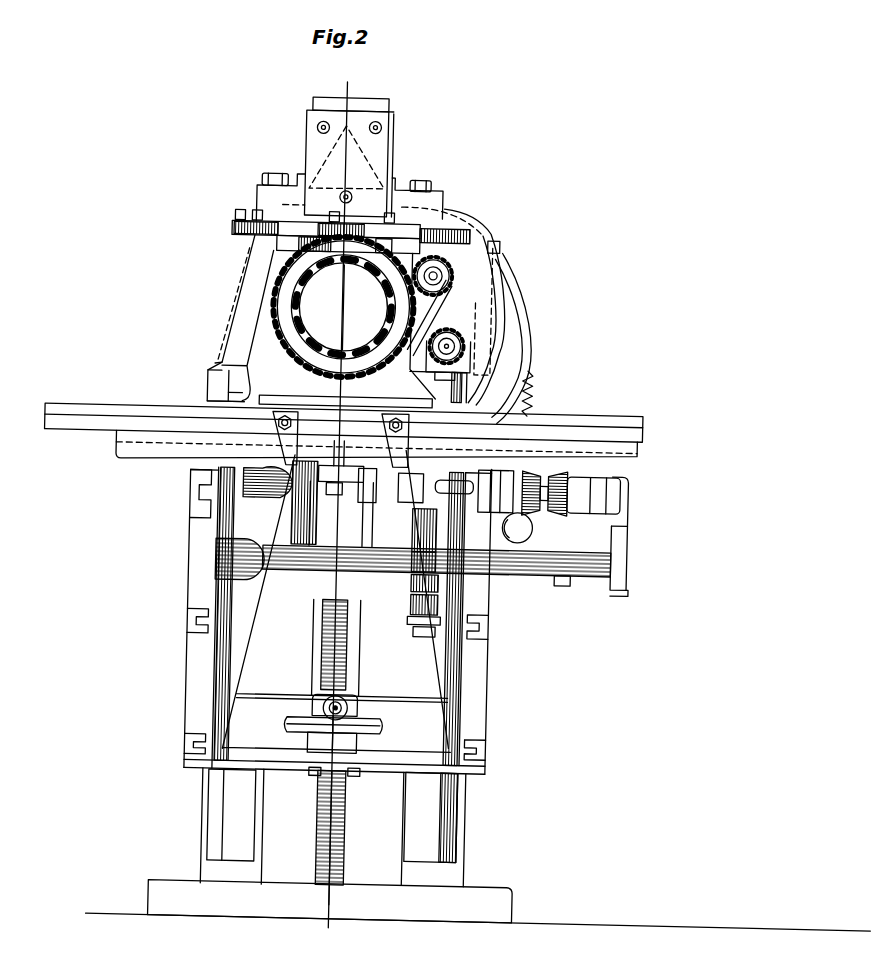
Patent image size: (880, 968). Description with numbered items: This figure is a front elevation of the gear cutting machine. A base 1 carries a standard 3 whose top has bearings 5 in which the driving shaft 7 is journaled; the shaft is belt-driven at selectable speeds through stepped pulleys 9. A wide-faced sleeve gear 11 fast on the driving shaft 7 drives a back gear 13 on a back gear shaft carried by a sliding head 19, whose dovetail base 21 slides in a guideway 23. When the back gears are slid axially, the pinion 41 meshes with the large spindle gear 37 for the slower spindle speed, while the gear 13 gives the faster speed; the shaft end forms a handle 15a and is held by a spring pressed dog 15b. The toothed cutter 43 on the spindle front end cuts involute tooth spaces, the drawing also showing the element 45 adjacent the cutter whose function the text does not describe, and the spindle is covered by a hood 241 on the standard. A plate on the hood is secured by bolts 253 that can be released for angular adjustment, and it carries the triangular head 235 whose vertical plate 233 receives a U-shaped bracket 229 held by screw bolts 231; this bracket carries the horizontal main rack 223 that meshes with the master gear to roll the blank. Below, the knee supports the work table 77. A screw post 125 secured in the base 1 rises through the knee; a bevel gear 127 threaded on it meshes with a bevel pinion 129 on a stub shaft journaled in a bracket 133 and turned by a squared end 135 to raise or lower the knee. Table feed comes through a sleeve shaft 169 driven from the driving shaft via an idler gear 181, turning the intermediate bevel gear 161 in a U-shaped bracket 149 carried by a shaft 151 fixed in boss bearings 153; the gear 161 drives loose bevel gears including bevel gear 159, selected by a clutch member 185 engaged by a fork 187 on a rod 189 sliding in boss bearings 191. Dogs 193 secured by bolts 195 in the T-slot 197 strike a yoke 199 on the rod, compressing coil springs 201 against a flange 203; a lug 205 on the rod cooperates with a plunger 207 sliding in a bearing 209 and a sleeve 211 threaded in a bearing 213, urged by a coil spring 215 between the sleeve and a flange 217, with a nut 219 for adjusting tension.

The base 1 is at (493, 890).
The standard 3 is at (474, 876).
The bearings 5 is at (335, 933).
The driving shaft 7 is at (451, 343).
The stepped pulleys 9 is at (513, 343).
The sleeve gear 11 is at (458, 327).
The gear 13 is at (444, 210).
The handle 15a is at (440, 271).
The spring pressed dog 15b is at (489, 247).
The sliding head 19 is at (271, 345).
The dovetail base 21 is at (215, 374).
The guideway 23 is at (229, 400).
The large gear 37 is at (286, 291).
The pinion 41 is at (450, 259).
The cutter 43 is at (296, 301).
The bore 45 is at (246, 314).
The work table 77 is at (566, 415).
The screw post 125 is at (353, 828).
The bevel gear 127 is at (377, 727).
The bevel pinion 129 is at (357, 700).
The bracket 133 is at (361, 745).
The squared end 135 is at (357, 710).
The U-shaped bracket 149 is at (619, 530).
The shaft 151 is at (565, 580).
The boss bearings 153 is at (476, 589).
The bevel gear 159 is at (564, 469).
The intermediate bevel gear 161 is at (552, 465).
The sleeve shaft 169 is at (513, 548).
The idler gear 181 is at (529, 379).
The clutch member 185 is at (616, 491).
The fork 187 is at (511, 466).
The rod 189 is at (470, 485).
The boss bearings 191 is at (418, 495).
The dogs 193 is at (387, 446).
The bolts 195 is at (395, 419).
The T-slot 197 is at (314, 423).
The yoke 199 is at (339, 458).
The coil springs 201 is at (322, 496).
The flange 203 is at (375, 505).
The lug 205 is at (424, 474).
The plunger 207 is at (522, 522).
The bearing 209 is at (424, 526).
The sleeve 211 is at (415, 625).
The bearing 213 is at (420, 606).
The coil spring 215 is at (419, 576).
The flange 217 is at (417, 546).
The nut 219 is at (417, 648).
The main rack 223 is at (274, 241).
The U-shaped bracket 229 is at (298, 131).
The screw bolts 231 is at (343, 196).
The vertical plate 233 is at (301, 104).
The triangular head 235 is at (317, 152).
The hood 241 is at (455, 267).
The bolts 253 is at (418, 181).